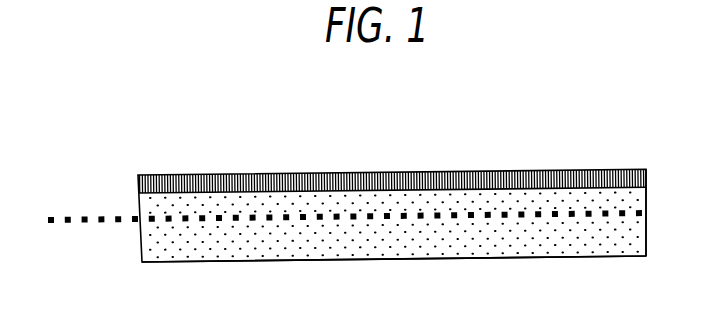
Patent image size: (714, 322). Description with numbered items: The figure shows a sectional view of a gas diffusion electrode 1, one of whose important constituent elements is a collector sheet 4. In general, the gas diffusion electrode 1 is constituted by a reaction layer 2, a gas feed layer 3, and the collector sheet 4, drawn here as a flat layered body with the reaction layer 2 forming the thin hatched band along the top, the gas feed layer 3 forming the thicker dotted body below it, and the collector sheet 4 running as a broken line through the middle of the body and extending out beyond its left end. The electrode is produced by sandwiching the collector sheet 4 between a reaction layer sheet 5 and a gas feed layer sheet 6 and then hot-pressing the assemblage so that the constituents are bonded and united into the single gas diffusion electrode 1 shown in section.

The gas diffusion electrode 1 is at (514, 145).
The reaction layer 2 is at (265, 172).
The gas feed layer 3 is at (402, 198).
The collector sheet 4 is at (83, 217).
The reaction layer sheet 5 is at (617, 170).
The gas feed layer sheet 6 is at (605, 247).